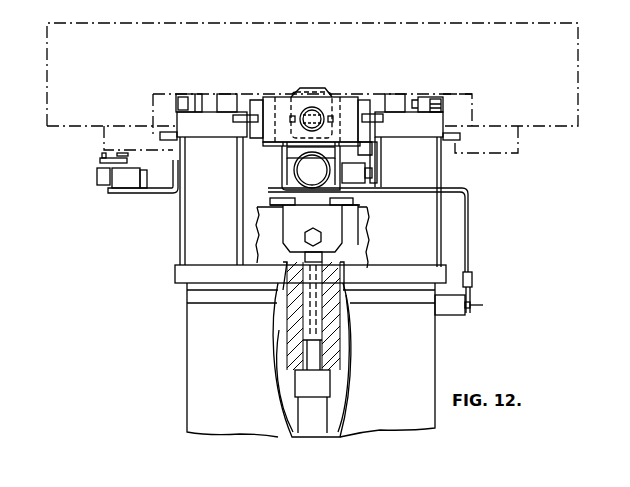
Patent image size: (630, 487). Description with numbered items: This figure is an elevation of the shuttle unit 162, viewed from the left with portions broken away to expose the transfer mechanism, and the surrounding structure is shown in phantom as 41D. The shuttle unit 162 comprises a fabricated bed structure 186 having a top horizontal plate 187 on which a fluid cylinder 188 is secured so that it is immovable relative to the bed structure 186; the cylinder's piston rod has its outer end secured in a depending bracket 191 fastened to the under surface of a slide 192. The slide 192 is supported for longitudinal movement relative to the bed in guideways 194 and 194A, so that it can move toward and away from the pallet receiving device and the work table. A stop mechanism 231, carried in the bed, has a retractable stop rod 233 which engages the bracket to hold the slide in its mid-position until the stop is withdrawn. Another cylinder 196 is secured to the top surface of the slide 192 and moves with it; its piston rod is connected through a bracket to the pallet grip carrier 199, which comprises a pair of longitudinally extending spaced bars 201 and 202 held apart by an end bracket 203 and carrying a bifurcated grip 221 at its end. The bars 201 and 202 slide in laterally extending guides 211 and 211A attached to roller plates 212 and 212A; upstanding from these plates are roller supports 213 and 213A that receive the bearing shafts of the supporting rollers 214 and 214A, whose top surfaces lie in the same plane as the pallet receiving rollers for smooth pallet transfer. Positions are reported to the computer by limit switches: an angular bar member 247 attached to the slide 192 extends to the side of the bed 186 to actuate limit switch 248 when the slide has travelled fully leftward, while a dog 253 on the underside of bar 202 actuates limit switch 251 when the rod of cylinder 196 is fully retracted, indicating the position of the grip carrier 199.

The support frame 41D is at (418, 40).
The pallet grip carrier 199 is at (319, 82).
The bifurcated grip 221 is at (305, 92).
The bar 202 is at (350, 108).
The end bracket 203 is at (270, 110).
The bar 201 is at (253, 102).
The roller support 213 is at (194, 102).
The supporting roller 214 is at (180, 97).
The roller plate 212 is at (187, 125).
The guide 211 is at (247, 118).
The guide 211A is at (372, 118).
The roller support 213A is at (432, 100).
The supporting roller 214A is at (437, 102).
The roller plate 212A is at (430, 125).
The dog 253 is at (372, 142).
The limit switch 251 is at (372, 177).
The cylinder 196 is at (307, 168).
The guideway 194 is at (272, 203).
The slide 192 is at (290, 208).
The stop rod 233 is at (298, 259).
The guideway 194A is at (353, 202).
The bracket 191 is at (333, 237).
The fluid cylinder 188 is at (335, 260).
The top horizontal plate 187 is at (192, 272).
The angular bar member 247 is at (473, 263).
The limit switch 248 is at (480, 310).
The bed structure 186 is at (425, 338).
The shuttle unit 162 is at (168, 361).
The stop mechanism 231 is at (290, 405).